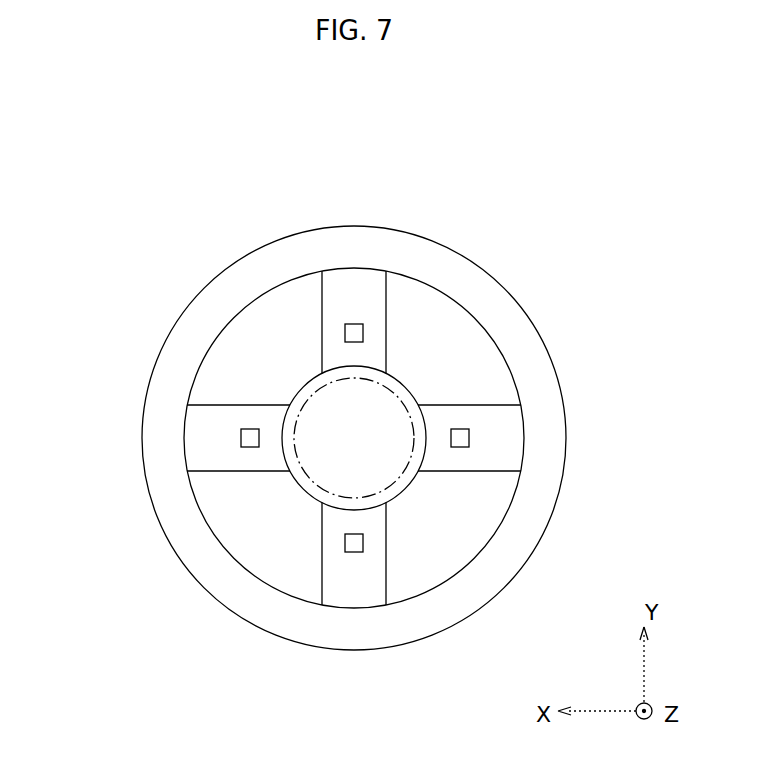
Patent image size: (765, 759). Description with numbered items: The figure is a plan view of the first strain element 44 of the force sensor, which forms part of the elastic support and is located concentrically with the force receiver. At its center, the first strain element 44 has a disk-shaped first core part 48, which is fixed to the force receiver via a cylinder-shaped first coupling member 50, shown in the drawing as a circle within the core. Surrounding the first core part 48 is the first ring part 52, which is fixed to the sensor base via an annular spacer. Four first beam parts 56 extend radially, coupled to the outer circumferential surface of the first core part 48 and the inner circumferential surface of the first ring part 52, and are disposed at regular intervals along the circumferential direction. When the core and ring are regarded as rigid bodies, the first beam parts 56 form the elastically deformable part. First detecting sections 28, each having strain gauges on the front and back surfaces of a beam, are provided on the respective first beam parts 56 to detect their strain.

The first strain element 44 is at (411, 134).
The first ring part 52 is at (187, 570).
The first core part 48 is at (413, 490).
The first coupling member 50 is at (300, 405).
The first beam parts 56 is at (386, 297).
The first detecting sections 28 is at (345, 333).